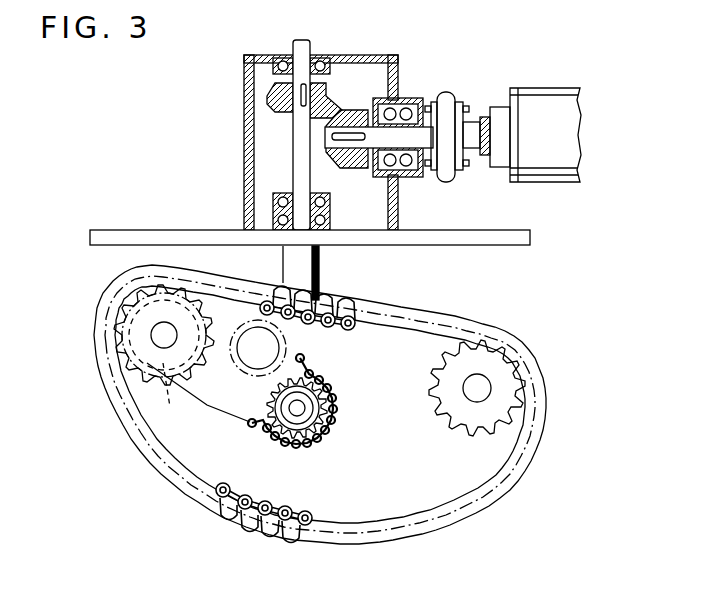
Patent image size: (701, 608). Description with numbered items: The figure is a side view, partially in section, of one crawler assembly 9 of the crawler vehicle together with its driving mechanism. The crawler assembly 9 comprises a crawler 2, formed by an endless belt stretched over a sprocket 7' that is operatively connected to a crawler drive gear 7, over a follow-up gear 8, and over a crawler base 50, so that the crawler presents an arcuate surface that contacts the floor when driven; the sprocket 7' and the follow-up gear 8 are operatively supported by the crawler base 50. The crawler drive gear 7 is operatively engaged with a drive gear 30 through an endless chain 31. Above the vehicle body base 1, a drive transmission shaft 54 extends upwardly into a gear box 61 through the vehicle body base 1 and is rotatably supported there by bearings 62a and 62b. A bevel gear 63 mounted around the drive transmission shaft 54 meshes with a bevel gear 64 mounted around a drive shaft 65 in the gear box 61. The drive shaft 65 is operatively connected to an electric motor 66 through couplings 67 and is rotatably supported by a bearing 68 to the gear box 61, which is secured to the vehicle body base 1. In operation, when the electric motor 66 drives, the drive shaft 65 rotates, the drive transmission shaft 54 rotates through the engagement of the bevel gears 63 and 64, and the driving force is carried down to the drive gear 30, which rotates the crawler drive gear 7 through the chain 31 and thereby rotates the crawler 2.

The vehicle body base 1 is at (128, 230).
The crawler 2 is at (214, 510).
The crawler drive gear 7 is at (182, 356).
The sprocket 7' is at (177, 348).
The follow-up gear 8 is at (438, 395).
The crawler assembly 9 is at (426, 294).
The drive gear 30 is at (322, 432).
The endless chain 31 is at (306, 362).
The crawler base 50 is at (440, 483).
The drive transmission shaft 54 is at (297, 46).
The gear box 61 is at (245, 120).
The bearing 62a is at (273, 206).
The bearing 62b is at (322, 60).
The bevel gear 63 is at (273, 108).
The bevel gear 64 is at (331, 172).
The drive shaft 65 is at (426, 150).
The electric motor 66 is at (540, 88).
The couplings 67 is at (447, 92).
The bearing 68 is at (405, 102).